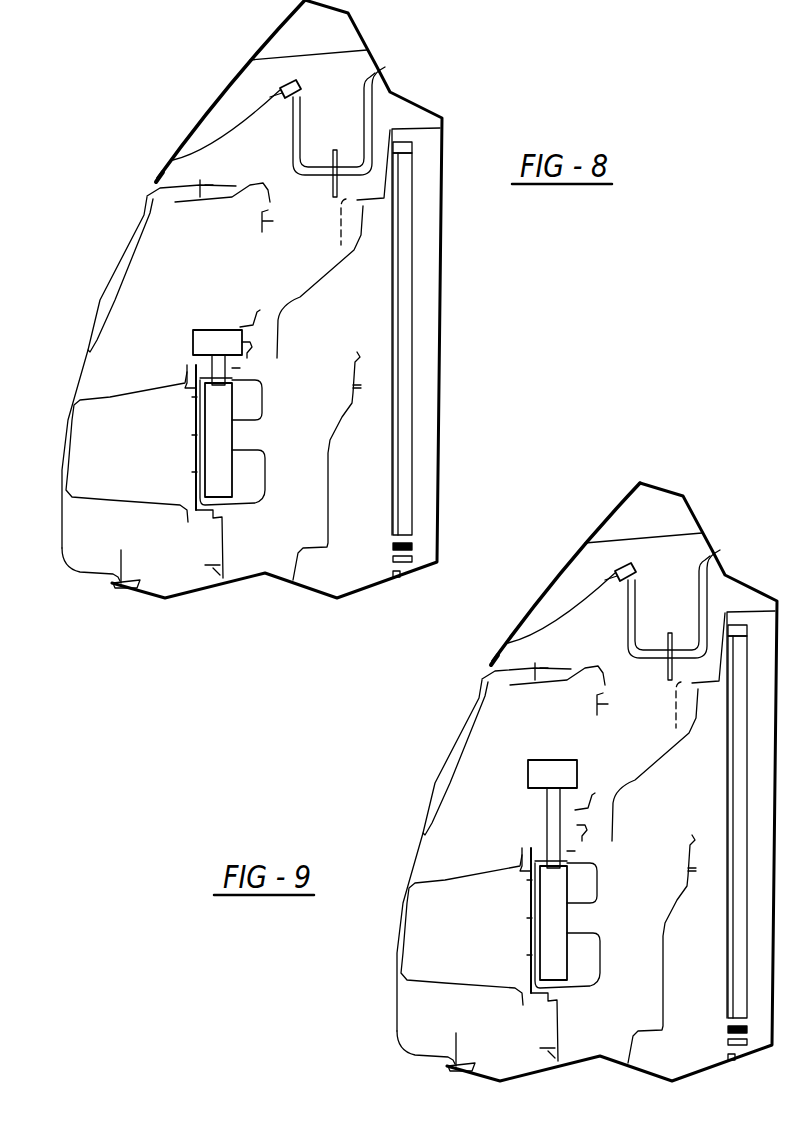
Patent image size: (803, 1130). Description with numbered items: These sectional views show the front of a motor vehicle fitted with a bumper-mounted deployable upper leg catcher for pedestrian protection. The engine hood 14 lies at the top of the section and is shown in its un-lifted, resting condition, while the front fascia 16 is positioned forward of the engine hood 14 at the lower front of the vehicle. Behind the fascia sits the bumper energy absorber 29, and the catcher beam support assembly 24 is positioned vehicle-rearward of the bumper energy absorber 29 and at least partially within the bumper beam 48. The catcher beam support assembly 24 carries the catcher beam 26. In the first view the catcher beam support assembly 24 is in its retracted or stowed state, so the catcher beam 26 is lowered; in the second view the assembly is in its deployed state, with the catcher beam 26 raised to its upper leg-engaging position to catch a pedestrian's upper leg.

In FIG. 8, the engine hood 14 is at (227, 107).
In FIG. 9, the engine hood 14 is at (595, 548).
In FIG. 8, the front fascia 16 is at (93, 537).
In FIG. 9, the front fascia 16 is at (423, 1007).
In FIG. 8, the catcher beam support assembly 24 is at (218, 417).
In FIG. 9, the catcher beam support assembly 24 is at (553, 895).
In FIG. 8, the catcher beam 26 is at (205, 338).
In FIG. 9, the catcher beam 26 is at (540, 770).
In FIG. 8, the bumper energy absorber 29 is at (100, 449).
In FIG. 9, the bumper energy absorber 29 is at (438, 921).
In FIG. 8, the bumper beam 48 is at (250, 488).
In FIG. 9, the bumper beam 48 is at (583, 970).